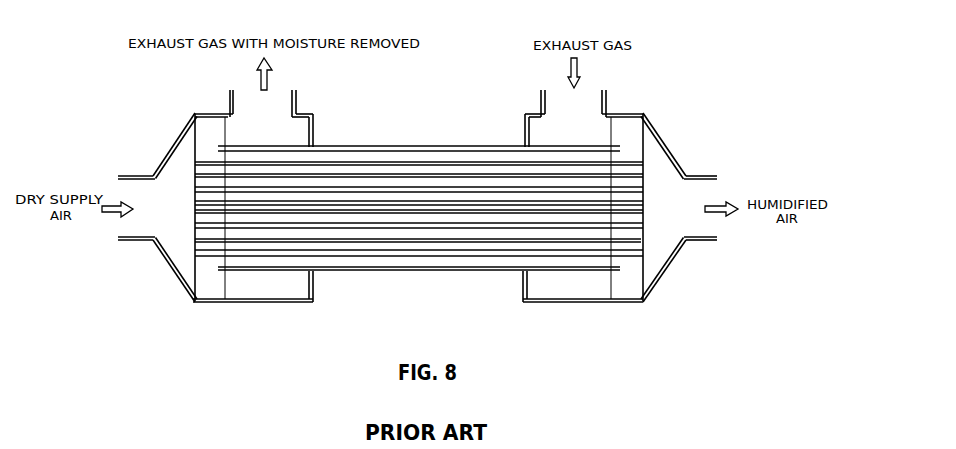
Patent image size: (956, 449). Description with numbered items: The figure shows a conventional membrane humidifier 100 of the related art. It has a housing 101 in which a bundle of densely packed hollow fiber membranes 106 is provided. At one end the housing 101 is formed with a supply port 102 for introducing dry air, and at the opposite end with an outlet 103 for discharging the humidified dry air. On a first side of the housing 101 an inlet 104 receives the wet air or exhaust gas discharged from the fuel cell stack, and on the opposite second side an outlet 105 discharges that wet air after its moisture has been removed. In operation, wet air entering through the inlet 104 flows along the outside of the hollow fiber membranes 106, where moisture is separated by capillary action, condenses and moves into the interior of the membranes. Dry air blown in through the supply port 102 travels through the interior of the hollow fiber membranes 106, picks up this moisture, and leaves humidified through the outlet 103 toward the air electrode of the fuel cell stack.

The conventional membrane humidifier 100 is at (406, 124).
The housing 101 is at (628, 112).
The supply port 102 is at (137, 177).
The outlet 103 is at (693, 178).
The inlet 104 is at (558, 100).
The outlet 105 is at (244, 99).
The hollow fiber membrane 106 is at (408, 235).